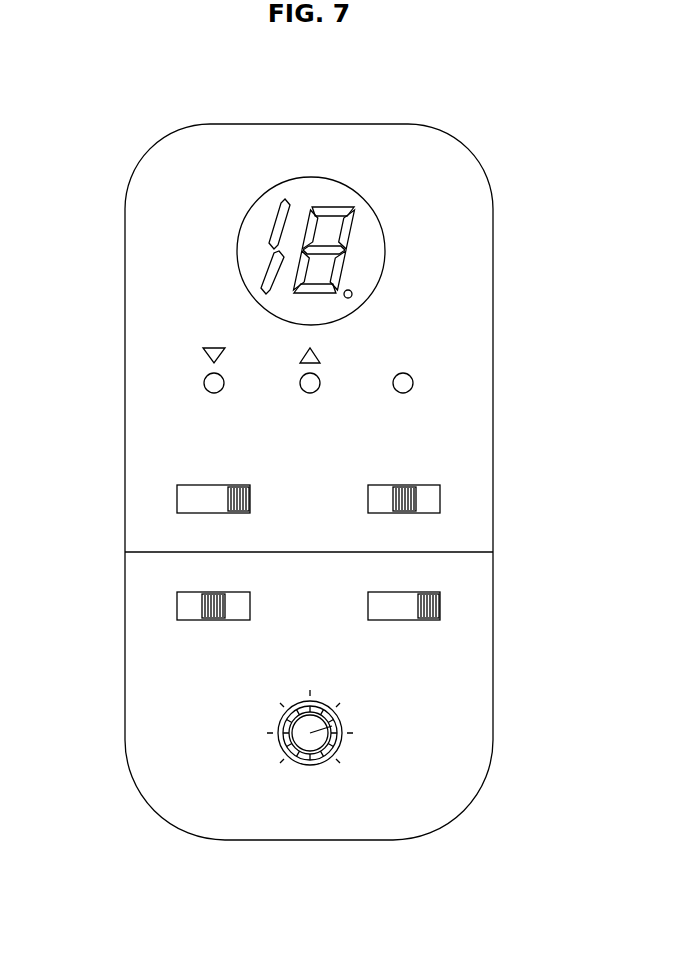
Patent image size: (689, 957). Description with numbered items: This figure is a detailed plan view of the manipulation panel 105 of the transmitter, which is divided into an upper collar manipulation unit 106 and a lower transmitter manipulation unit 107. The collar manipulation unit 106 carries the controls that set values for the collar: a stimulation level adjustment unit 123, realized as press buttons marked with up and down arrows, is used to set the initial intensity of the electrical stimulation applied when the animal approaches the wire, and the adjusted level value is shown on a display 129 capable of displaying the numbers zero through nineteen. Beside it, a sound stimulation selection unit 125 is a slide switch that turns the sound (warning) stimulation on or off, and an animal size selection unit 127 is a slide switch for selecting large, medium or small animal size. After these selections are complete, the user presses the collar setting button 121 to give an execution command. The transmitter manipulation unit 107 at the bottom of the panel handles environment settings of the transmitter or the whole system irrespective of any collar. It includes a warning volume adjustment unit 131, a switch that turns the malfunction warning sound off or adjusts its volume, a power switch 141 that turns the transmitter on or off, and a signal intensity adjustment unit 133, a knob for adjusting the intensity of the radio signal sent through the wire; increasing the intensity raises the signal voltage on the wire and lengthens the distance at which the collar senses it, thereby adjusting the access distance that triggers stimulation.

The manipulation panel 105 is at (124, 141).
The collar manipulation unit 106 is at (473, 256).
The transmitter manipulation unit 107 is at (473, 690).
The display 129 is at (311, 190).
The stimulation level adjustment unit 123 is at (300, 383).
The collar setting button 121 is at (413, 379).
The sound stimulation selection unit 125 is at (240, 500).
The animal size selection unit 127 is at (405, 498).
The warning volume adjustment unit 131 is at (213, 607).
The power switch 141 is at (430, 603).
The signal intensity adjustment unit 133 is at (332, 726).